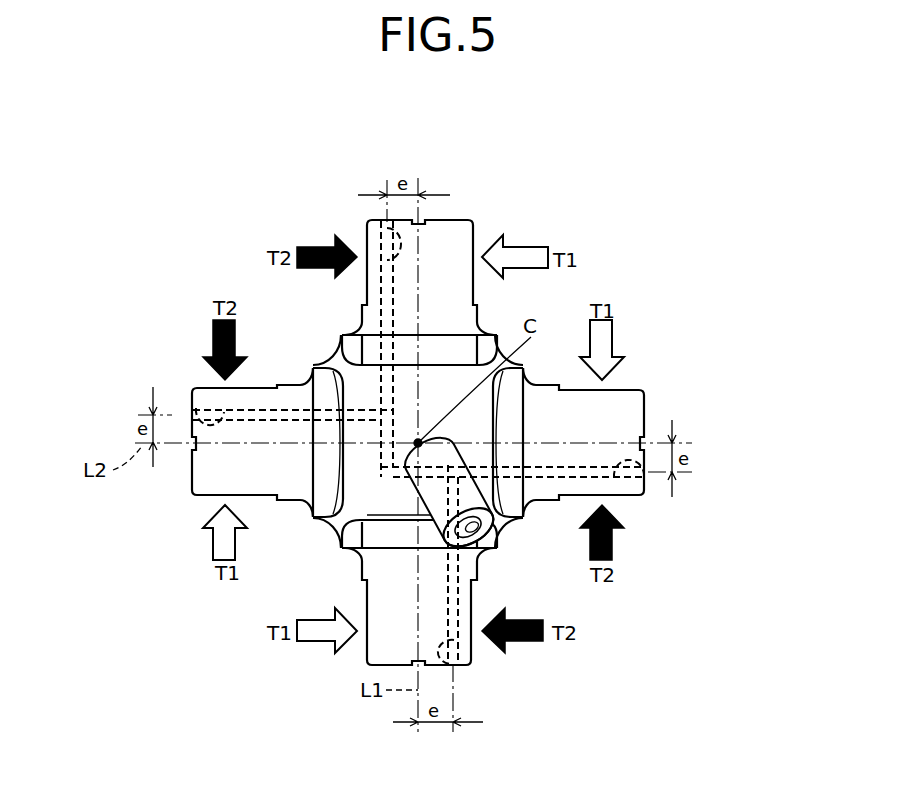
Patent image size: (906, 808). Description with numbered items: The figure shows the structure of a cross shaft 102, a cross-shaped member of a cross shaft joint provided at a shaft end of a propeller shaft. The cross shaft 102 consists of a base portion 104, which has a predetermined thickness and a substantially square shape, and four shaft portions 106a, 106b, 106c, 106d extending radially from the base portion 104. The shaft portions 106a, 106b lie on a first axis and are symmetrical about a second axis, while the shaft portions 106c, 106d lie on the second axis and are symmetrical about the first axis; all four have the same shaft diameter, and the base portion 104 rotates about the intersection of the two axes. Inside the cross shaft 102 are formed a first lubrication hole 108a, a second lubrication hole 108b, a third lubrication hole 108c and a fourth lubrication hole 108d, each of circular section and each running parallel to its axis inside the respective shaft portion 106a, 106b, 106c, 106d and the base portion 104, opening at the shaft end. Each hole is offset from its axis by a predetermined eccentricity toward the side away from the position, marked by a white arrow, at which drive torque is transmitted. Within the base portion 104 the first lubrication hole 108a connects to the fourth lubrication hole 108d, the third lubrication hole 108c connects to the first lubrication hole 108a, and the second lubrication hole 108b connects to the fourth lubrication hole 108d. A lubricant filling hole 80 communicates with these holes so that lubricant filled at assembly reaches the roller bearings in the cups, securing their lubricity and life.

The cross shaft 102 is at (587, 162).
The base portion 104 is at (345, 372).
The shaft portion 106a is at (458, 235).
The shaft portion 106b is at (378, 652).
The shaft portion 106c is at (208, 482).
The shaft portion 106d is at (632, 408).
The first lubrication hole 108a is at (389, 230).
The second lubrication hole 108b is at (450, 666).
The third lubrication hole 108c is at (197, 406).
The fourth lubrication hole 108d is at (649, 478).
The lubricant filling hole 80 is at (468, 516).